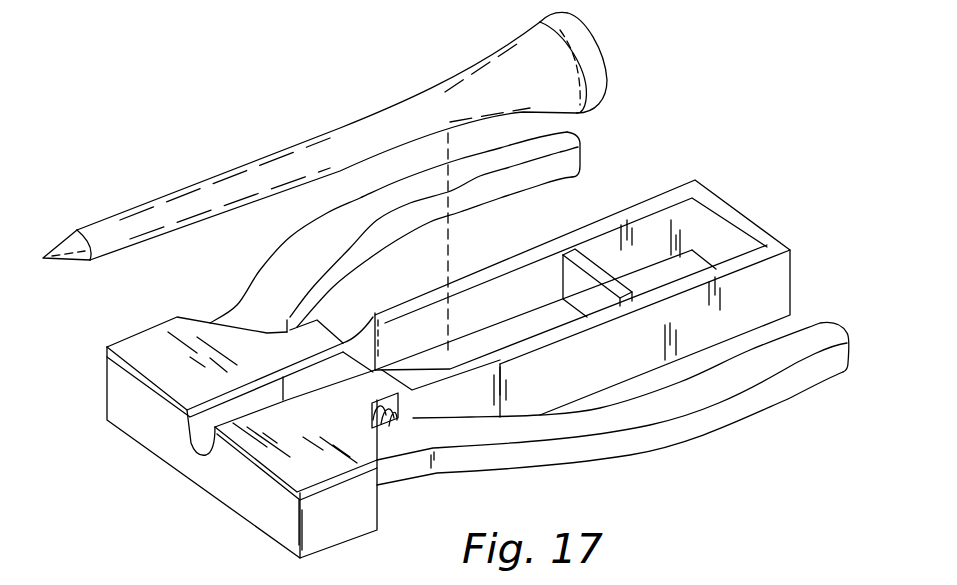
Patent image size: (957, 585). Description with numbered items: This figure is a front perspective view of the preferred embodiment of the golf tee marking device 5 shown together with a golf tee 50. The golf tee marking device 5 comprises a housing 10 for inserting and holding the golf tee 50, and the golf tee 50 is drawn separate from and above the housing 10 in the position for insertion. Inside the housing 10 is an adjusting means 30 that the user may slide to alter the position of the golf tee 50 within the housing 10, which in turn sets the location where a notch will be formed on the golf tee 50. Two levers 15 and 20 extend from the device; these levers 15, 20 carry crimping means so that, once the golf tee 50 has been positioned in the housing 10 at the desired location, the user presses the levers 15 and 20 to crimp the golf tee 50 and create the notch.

The golf tee marking device 5 is at (757, 194).
The housing 10 is at (173, 387).
The lever 15 is at (270, 268).
The lever 20 is at (733, 413).
The adjusting means 30 is at (600, 273).
The golf tee 50 is at (220, 187).